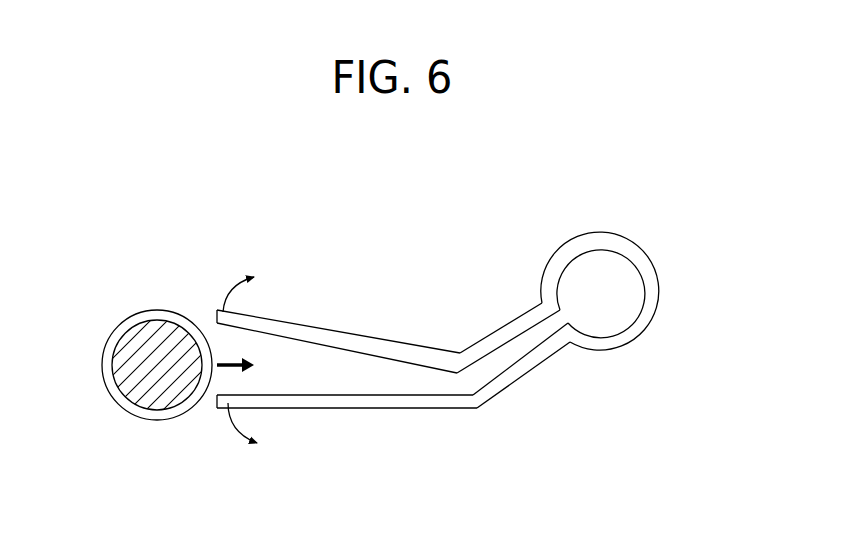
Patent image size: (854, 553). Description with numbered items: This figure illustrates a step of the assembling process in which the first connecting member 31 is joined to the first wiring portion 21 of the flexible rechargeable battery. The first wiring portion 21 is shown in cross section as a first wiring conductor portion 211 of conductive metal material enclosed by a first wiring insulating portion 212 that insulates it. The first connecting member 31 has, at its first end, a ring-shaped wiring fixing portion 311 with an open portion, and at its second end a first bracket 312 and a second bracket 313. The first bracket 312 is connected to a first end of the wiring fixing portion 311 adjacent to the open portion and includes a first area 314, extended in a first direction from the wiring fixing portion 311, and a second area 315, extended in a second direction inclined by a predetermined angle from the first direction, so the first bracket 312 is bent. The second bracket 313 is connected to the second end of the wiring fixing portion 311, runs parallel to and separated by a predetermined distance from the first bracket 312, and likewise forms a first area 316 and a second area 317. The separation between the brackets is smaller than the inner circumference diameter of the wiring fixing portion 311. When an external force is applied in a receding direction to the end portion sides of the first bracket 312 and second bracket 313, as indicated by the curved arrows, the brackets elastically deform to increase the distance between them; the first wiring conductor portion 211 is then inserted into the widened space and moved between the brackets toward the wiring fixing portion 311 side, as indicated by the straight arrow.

The first wiring portion 21 is at (172, 351).
The first wiring conductor portion 211 is at (138, 321).
The first wiring insulating portion 212 is at (190, 311).
The first connecting member 31 is at (463, 336).
The wiring fixing portion 311 is at (654, 297).
The first bracket 312 is at (388, 298).
The second bracket 313 is at (393, 413).
The first area 314 is at (488, 343).
The second area 315 is at (367, 345).
The first area 316 is at (513, 375).
The second area 317 is at (317, 403).